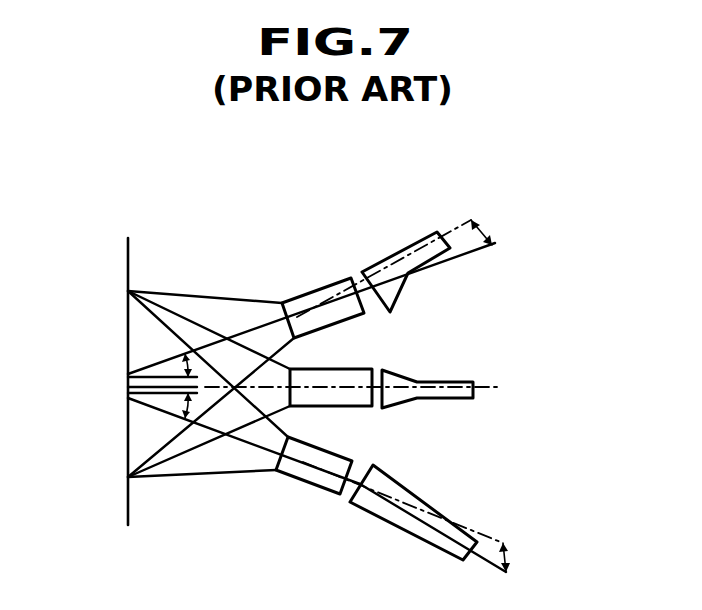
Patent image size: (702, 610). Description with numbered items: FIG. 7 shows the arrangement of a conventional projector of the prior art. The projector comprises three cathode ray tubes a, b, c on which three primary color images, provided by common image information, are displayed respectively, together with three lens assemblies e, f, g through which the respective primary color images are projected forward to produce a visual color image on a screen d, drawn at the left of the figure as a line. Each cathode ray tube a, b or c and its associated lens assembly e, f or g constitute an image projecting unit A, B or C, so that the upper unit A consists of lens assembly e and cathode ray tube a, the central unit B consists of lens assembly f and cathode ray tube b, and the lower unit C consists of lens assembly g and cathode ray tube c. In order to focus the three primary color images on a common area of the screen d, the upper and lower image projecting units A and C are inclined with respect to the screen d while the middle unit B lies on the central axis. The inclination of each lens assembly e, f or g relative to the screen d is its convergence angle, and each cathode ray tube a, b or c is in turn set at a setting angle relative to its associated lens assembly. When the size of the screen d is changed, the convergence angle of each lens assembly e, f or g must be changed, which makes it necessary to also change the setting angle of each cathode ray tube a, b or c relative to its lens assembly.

The screen d is at (128, 270).
The lens assembly e is at (312, 293).
The cathode ray tube a is at (400, 262).
The image projecting unit A is at (366, 255).
The lens assembly f is at (360, 370).
The cathode ray tube b is at (403, 326).
The image projecting unit B is at (387, 342).
The lens assembly g is at (310, 488).
The cathode ray tube c is at (413, 512).
The image projecting unit C is at (376, 518).